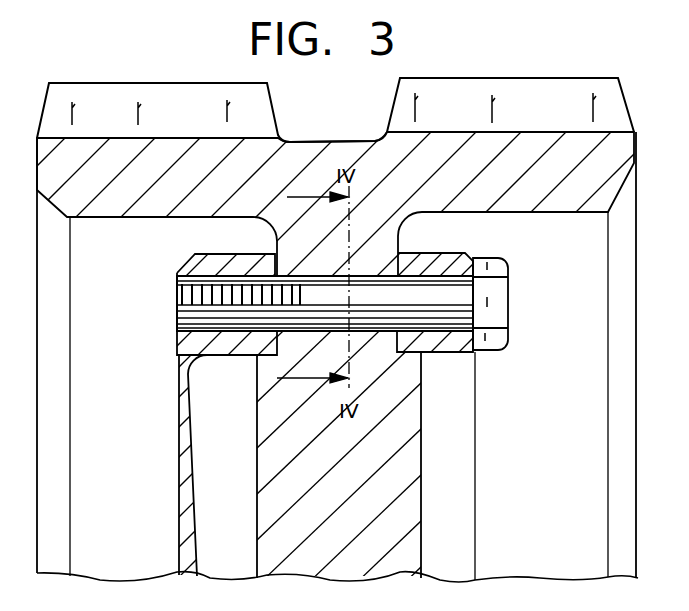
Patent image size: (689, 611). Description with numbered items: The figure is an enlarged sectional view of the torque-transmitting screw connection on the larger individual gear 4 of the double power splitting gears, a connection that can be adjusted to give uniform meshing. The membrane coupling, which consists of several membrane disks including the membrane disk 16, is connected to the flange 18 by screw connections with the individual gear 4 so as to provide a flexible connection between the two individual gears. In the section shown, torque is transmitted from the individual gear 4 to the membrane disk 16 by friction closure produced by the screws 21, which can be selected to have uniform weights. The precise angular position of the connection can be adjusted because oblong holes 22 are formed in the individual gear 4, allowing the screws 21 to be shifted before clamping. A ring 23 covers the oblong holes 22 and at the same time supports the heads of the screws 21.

The individual gear 4 is at (294, 157).
The membrane disk 16 is at (180, 412).
The flange 18 is at (222, 262).
The screw 21 is at (495, 340).
The oblong hole 22 is at (403, 272).
The ring 23 is at (425, 345).